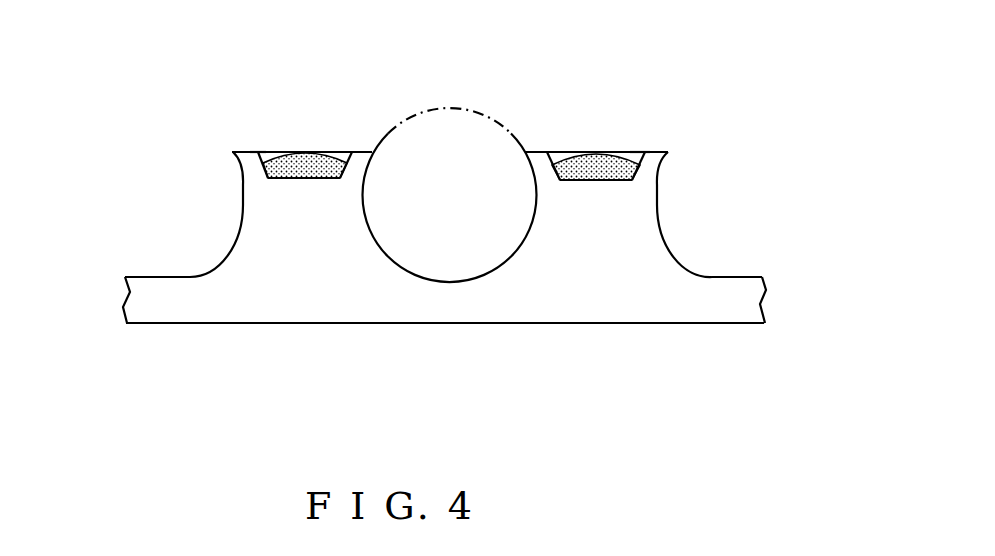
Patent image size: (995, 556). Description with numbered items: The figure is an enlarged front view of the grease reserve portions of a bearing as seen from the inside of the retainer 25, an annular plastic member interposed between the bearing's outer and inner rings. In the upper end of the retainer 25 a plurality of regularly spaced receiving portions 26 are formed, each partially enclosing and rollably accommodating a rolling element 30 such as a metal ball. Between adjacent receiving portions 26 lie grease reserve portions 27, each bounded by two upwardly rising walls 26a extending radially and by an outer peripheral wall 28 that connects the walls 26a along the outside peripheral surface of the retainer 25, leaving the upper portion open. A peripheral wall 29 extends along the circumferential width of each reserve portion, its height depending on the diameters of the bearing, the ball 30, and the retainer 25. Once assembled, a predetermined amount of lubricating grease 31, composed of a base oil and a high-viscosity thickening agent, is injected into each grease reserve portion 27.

The retainer 25 is at (320, 315).
The receiving portion 26 is at (170, 277).
The upwardly rising wall 26a is at (243, 150).
The grease reserve portion 27 is at (329, 136).
The outer peripheral wall 28 is at (261, 153).
The peripheral wall 29 is at (277, 152).
The rolling element 30 is at (481, 112).
The lubricating grease 31 is at (308, 152).